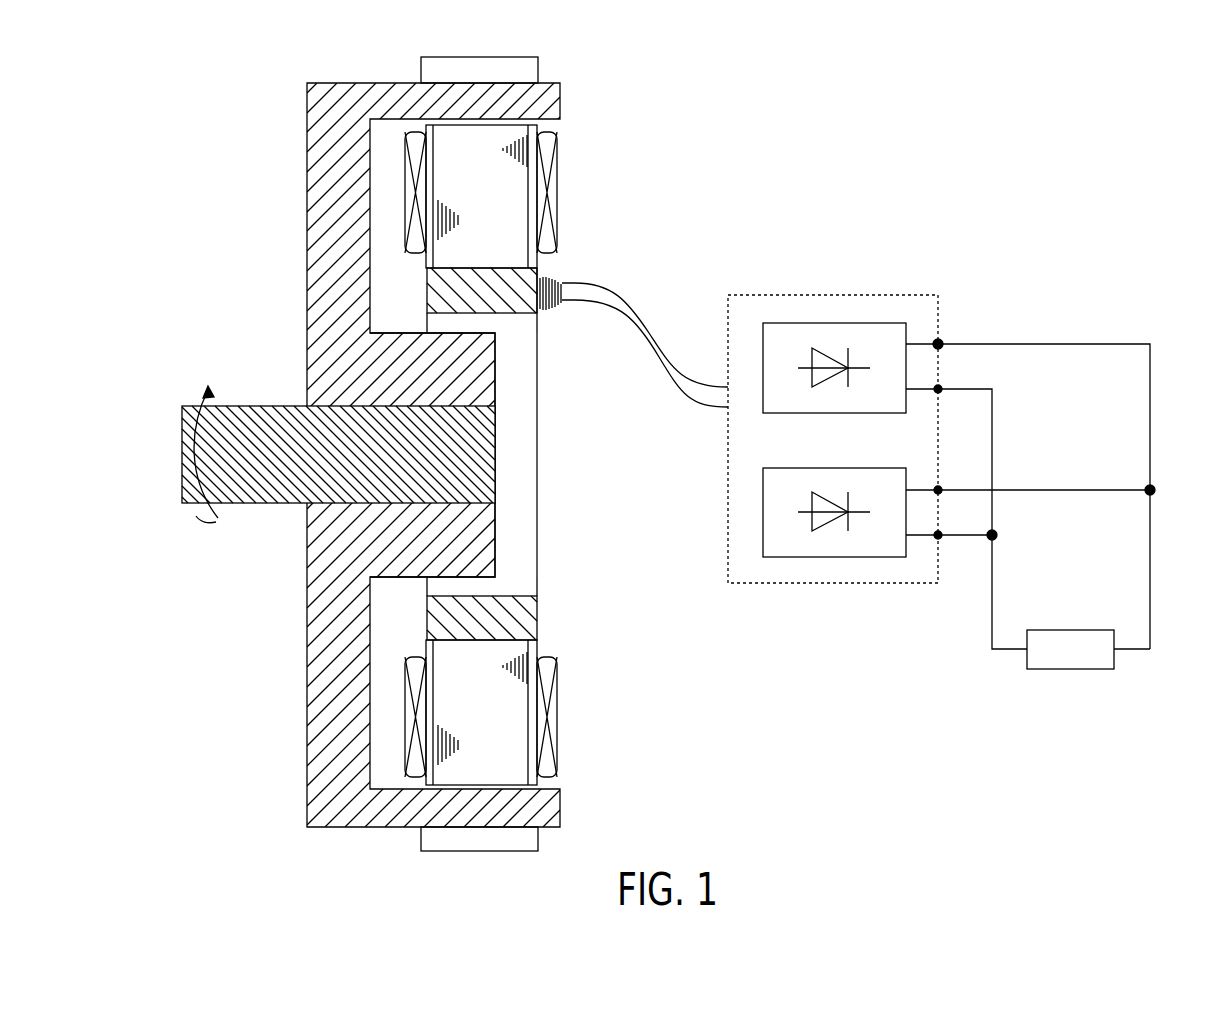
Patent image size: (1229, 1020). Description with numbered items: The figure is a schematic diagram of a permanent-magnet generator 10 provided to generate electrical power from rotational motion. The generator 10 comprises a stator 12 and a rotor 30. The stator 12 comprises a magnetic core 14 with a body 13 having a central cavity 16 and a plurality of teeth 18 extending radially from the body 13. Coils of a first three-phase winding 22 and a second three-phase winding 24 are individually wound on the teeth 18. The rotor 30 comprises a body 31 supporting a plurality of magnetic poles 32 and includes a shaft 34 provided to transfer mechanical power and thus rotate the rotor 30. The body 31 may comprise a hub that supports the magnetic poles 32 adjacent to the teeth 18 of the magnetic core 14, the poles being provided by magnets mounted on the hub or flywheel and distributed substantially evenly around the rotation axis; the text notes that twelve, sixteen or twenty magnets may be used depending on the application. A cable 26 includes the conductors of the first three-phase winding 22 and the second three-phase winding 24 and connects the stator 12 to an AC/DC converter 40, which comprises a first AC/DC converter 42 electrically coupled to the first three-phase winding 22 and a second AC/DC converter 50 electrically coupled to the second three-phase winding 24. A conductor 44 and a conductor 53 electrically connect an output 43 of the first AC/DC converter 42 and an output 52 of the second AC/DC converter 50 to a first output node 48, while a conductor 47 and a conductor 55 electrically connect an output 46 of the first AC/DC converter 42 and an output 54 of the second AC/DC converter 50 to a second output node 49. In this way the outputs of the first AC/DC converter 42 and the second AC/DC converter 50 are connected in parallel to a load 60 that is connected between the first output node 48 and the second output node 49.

The permanent-magnet generator 10 is at (180, 106).
The stator 12 is at (590, 156).
The body 13 is at (552, 368).
The magnetic core 14 is at (522, 630).
The central cavity 16 is at (528, 560).
The teeth 18 is at (512, 770).
The first three-phase winding 22 is at (557, 718).
The second three-phase winding 24 is at (481, 454).
The cable 26 is at (692, 395).
The rotor 30 is at (296, 258).
The body 31 is at (302, 355).
The magnetic poles 32 is at (465, 63).
The shaft 34 is at (252, 493).
The AC/DC converter 40 is at (897, 288).
The first AC/DC converter 42 is at (790, 322).
The output 43 is at (941, 342).
The conductor 44 is at (1062, 343).
The output 46 is at (940, 387).
The conductor 47 is at (979, 392).
The first output node 48 is at (1156, 489).
The second output node 49 is at (997, 535).
The second AC/DC converter 50 is at (778, 557).
The output 52 is at (936, 487).
The conductor 53 is at (1062, 488).
The output 54 is at (941, 533).
The conductor 55 is at (981, 538).
The load 60 is at (1068, 669).